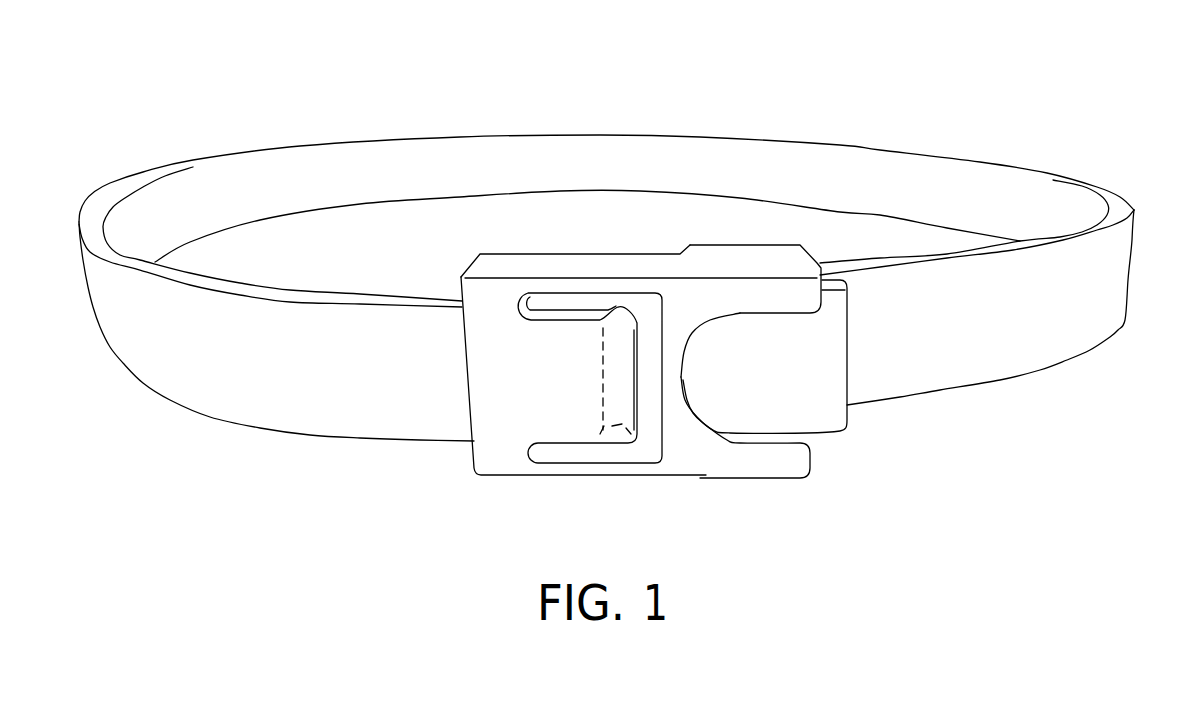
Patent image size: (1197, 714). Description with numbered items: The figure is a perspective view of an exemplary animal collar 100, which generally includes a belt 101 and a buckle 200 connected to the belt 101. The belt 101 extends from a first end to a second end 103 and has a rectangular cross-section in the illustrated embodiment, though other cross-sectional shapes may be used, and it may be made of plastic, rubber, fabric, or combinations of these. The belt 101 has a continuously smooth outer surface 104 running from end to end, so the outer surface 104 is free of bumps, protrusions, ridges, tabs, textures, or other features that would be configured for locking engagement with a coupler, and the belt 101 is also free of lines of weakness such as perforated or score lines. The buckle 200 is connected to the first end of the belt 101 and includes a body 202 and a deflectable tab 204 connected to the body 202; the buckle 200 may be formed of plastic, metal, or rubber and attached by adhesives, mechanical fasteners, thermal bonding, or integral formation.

The animal collar 100 is at (620, 285).
The belt 101 is at (620, 289).
The second end 103 is at (847, 361).
The outer surface 104 is at (1047, 305).
The buckle 200 is at (495, 462).
The body 202 is at (685, 303).
The deflectable tab 204 is at (638, 420).